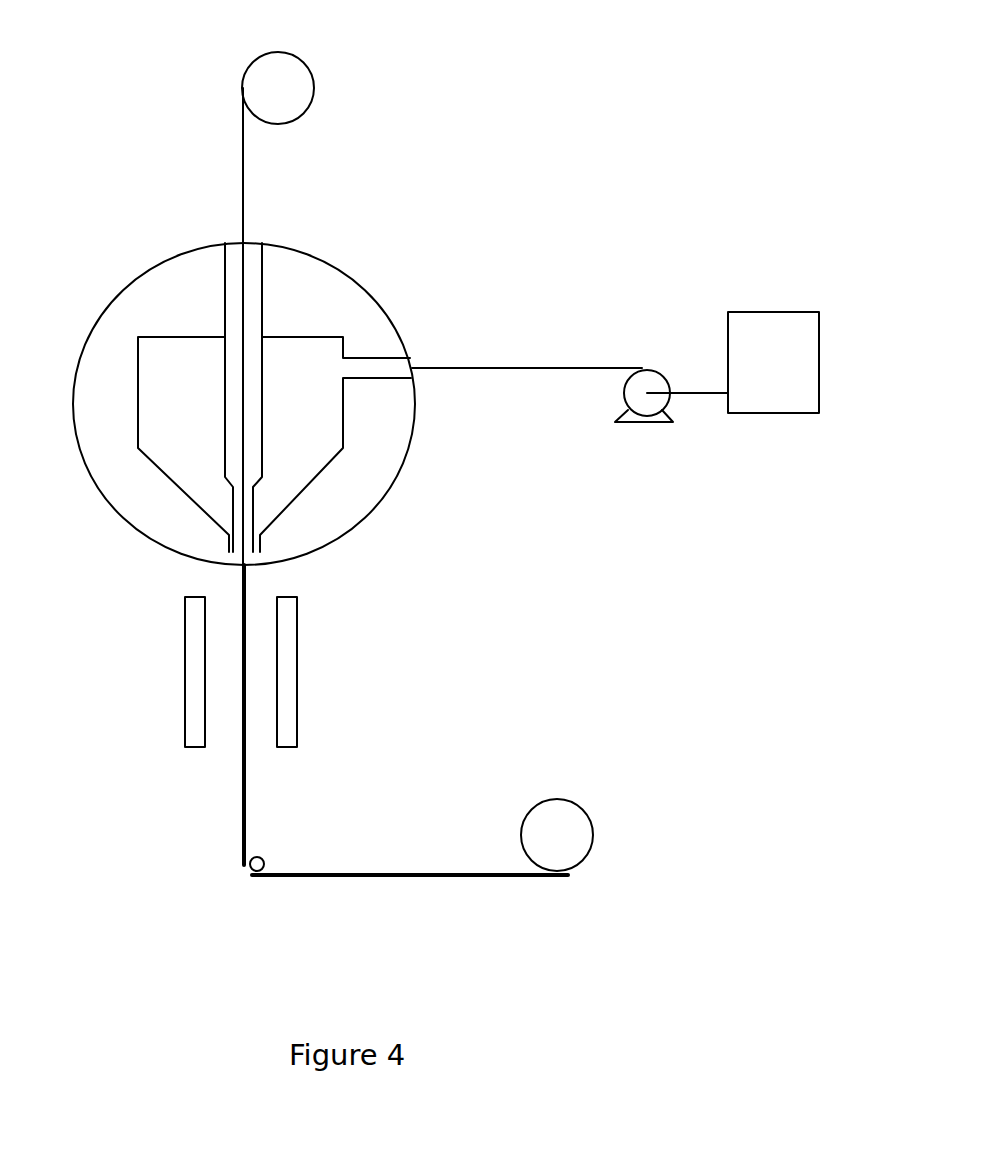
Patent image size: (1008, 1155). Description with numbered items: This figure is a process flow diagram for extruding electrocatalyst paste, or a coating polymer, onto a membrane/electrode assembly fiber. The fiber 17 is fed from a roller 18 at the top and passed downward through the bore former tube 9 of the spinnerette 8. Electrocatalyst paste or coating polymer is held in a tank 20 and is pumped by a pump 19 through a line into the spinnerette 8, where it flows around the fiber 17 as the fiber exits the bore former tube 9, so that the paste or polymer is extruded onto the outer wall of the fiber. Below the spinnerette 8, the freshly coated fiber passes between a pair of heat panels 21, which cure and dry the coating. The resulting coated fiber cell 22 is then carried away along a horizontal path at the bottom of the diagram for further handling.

The spinnerette 8 is at (127, 525).
The bore former tube 9 is at (262, 300).
The fiber 17 is at (242, 178).
The feed roller 18 is at (297, 55).
The pump 19 is at (640, 423).
The tank 20 is at (819, 352).
The heat panels 21 is at (185, 657).
The coated fiber cell 22 is at (352, 870).